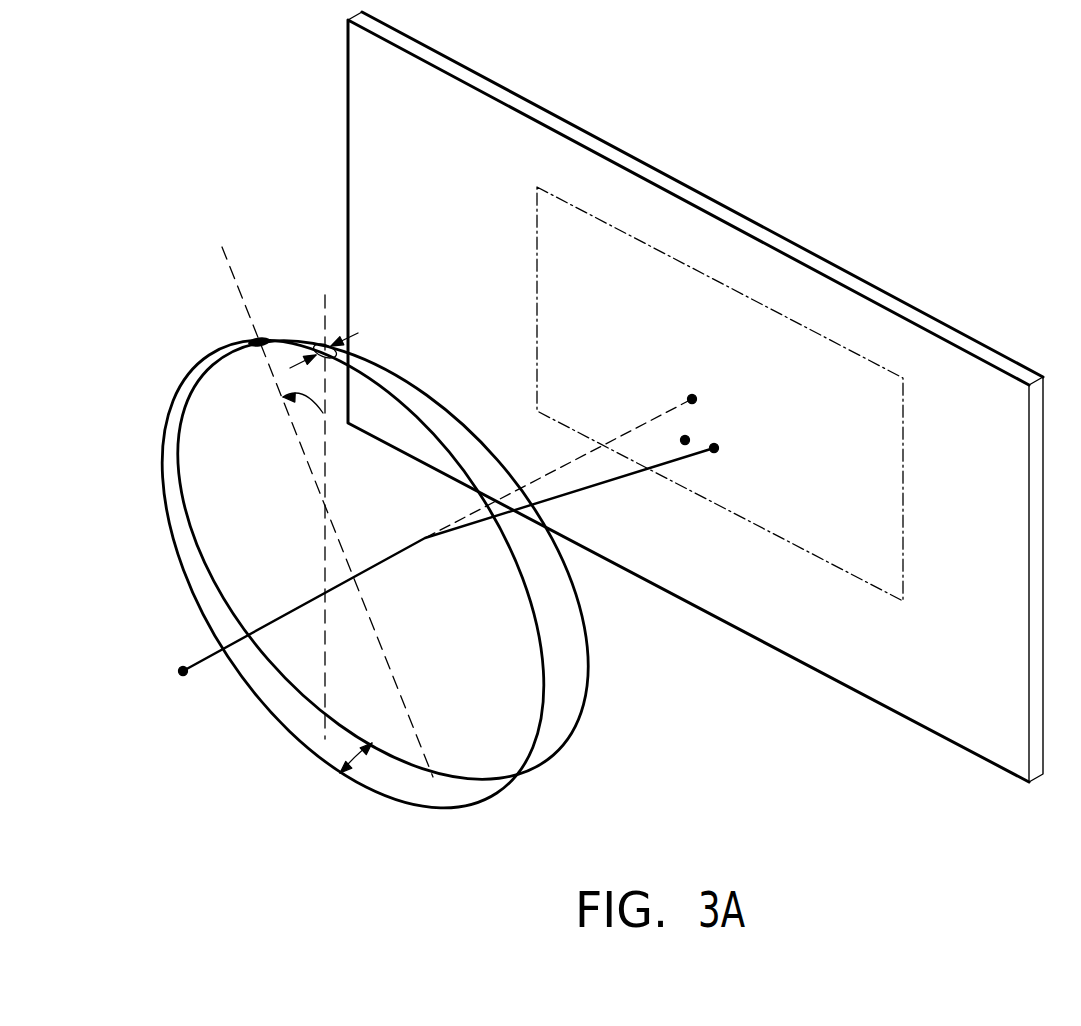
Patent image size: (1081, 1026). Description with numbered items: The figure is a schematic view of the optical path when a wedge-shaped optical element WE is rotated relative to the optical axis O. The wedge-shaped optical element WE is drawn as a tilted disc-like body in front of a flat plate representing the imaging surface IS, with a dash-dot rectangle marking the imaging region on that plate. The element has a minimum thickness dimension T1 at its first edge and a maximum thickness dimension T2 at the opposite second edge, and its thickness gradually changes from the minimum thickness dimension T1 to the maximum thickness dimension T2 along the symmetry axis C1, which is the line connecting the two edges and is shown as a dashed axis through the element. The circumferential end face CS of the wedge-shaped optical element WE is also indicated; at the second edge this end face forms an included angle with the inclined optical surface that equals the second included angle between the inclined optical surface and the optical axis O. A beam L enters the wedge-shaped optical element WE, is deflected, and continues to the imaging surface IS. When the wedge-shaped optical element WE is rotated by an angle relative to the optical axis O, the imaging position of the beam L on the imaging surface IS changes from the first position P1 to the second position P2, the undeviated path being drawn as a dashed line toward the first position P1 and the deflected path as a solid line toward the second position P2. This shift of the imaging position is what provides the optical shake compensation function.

The imaging surface IS is at (835, 502).
The wedge-shaped optical element WE is at (497, 740).
The circumferential end face CS is at (555, 697).
The symmetry axis C1 is at (323, 324).
The minimum thickness dimension T1 is at (315, 347).
The maximum thickness dimension T2 is at (362, 770).
The beam L is at (207, 658).
The optical axis O is at (642, 420).
The first position P1 is at (703, 396).
The second position P2 is at (720, 447).